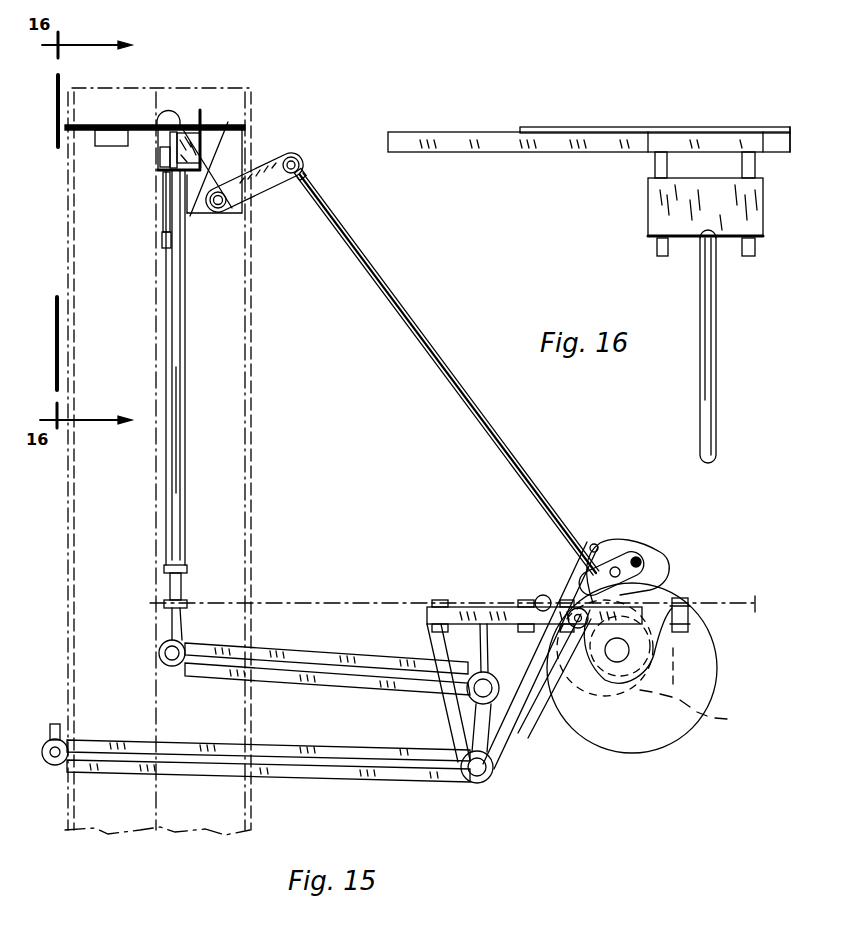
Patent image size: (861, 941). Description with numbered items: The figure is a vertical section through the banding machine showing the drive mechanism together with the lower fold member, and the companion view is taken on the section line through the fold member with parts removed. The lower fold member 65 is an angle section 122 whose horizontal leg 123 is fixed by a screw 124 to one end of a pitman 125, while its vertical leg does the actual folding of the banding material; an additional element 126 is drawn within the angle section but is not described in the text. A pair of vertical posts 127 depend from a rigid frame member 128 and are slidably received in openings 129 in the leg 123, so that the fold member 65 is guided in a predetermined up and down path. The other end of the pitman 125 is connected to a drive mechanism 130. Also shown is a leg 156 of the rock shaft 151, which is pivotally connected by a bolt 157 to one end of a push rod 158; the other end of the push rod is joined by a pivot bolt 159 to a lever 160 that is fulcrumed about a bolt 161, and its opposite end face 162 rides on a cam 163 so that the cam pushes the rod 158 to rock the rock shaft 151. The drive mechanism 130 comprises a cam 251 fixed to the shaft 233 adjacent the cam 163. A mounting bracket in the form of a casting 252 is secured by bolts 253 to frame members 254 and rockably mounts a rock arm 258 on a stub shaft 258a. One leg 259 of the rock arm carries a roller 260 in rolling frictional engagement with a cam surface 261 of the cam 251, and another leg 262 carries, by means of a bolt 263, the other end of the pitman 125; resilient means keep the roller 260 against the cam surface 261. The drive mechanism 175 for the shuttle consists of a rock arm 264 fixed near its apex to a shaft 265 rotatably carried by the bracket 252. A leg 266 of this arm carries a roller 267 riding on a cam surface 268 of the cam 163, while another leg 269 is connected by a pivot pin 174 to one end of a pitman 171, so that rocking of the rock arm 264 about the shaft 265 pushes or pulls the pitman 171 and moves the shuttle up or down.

In FIG. 15, the lower fold member 65 is at (204, 110).
In FIG. 16, the lower fold member 65 is at (772, 180).
In FIG. 15, the angle section 122 is at (243, 133).
In FIG. 16, the angle section 122 is at (766, 226).
In FIG. 15, the horizontal leg 123 is at (160, 160).
In FIG. 16, the horizontal leg 123 is at (655, 240).
In FIG. 15, the screw 124 is at (202, 145).
In FIG. 16, the screw 124 is at (705, 242).
In FIG. 15, the pitman 125 is at (174, 488).
In FIG. 16, the pitman 125 is at (717, 332).
In FIG. 15, the housing box 126 is at (190, 150).
In FIG. 16, the housing box 126 is at (705, 207).
In FIG. 15, the vertical posts 127 is at (160, 240).
In FIG. 16, the vertical posts 127 is at (748, 256).
In FIG. 15, the rigid frame member 128 is at (170, 113).
In FIG. 16, the rigid frame member 128 is at (589, 133).
In FIG. 15, the openings 129 is at (155, 186).
In FIG. 15, the drive mechanism 130 is at (345, 650).
In FIG. 15, the rock shaft 151 is at (222, 214).
In FIG. 15, the leg 156 is at (264, 185).
In FIG. 15, the bolt 157 is at (295, 160).
In FIG. 15, the push rod 158 is at (332, 214).
In FIG. 15, the pivot bolt 159 is at (617, 566).
In FIG. 15, the lever 160 is at (660, 566).
In FIG. 15, the bolt 161 is at (641, 558).
In FIG. 15, the end face 162 is at (592, 584).
In FIG. 15, the cam 163 is at (646, 606).
In FIG. 15, the pitman 171 is at (57, 724).
In FIG. 15, the pivot pin 174 is at (53, 766).
In FIG. 15, the drive mechanism 175 is at (306, 745).
In FIG. 15, the shaft 233 is at (620, 662).
In FIG. 15, the cam 251 is at (712, 648).
In FIG. 15, the mounting bracket 252 is at (445, 640).
In FIG. 15, the bolts 253 is at (430, 600).
In FIG. 15, the frame members 254 is at (395, 598).
In FIG. 15, the rock arm 258 is at (405, 697).
In FIG. 15, the stub shaft 258a is at (515, 770).
In FIG. 15, the leg 259 is at (545, 700).
In FIG. 15, the roller 260 is at (540, 598).
In FIG. 15, the cam surface 261 is at (640, 752).
In FIG. 15, the leg 262 is at (215, 636).
In FIG. 15, the bolt 263 is at (177, 667).
In FIG. 15, the rock arm 264 is at (410, 784).
In FIG. 15, the shaft 265 is at (482, 782).
In FIG. 15, the leg 266 is at (500, 733).
In FIG. 15, the roller 267 is at (471, 609).
In FIG. 15, the cam surface 268 is at (725, 716).
In FIG. 15, the leg 269 is at (226, 742).